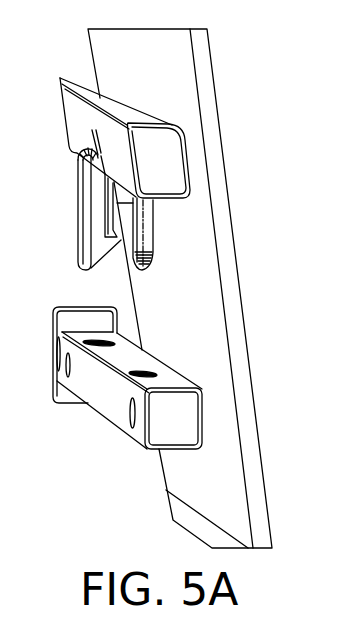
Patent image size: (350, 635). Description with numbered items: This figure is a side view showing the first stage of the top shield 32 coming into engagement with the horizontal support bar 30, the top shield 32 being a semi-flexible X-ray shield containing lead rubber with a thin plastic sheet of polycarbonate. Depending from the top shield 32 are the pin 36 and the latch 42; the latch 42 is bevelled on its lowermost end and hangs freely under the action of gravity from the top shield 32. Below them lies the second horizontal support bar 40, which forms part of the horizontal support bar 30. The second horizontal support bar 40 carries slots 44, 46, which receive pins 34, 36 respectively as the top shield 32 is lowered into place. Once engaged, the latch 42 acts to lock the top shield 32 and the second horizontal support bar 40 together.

The horizontal support bar 30 is at (159, 292).
The top shield 32 is at (216, 153).
The pin 34 is at (186, 250).
The pin 36 is at (128, 267).
The second horizontal support bar 40 is at (125, 379).
The latch 42 is at (80, 196).
The slot 44 is at (102, 342).
The slot 46 is at (143, 373).